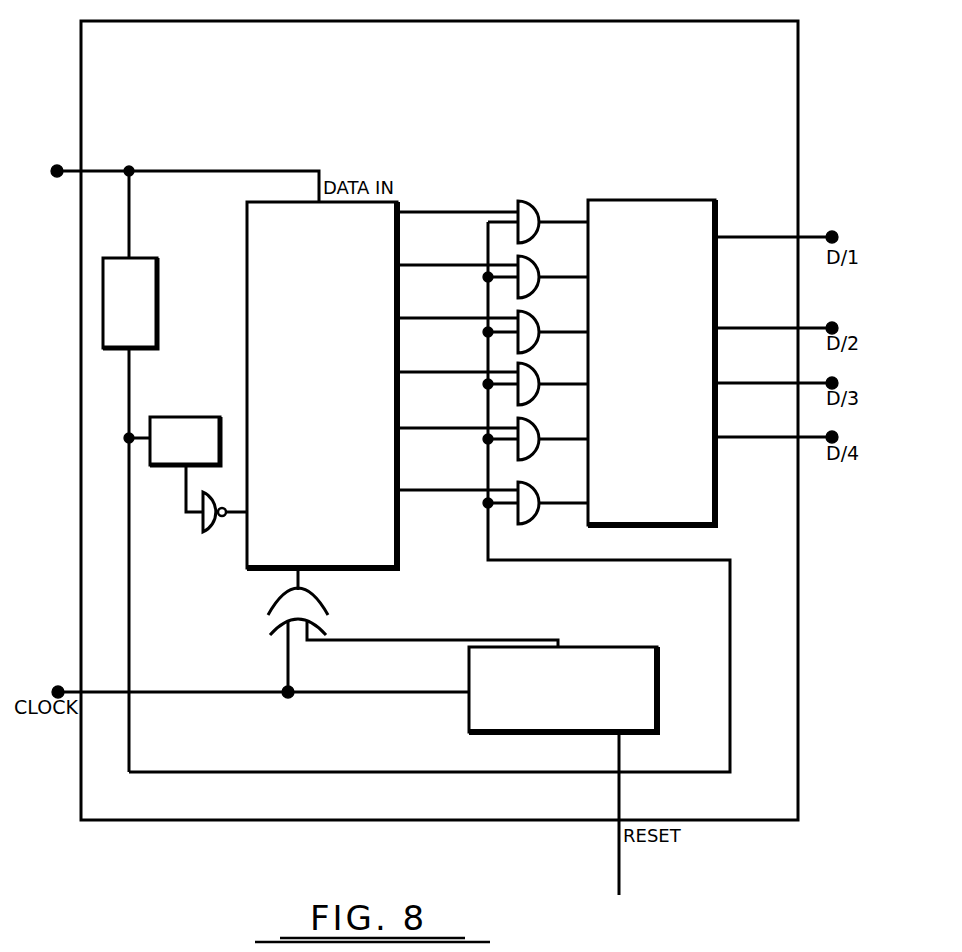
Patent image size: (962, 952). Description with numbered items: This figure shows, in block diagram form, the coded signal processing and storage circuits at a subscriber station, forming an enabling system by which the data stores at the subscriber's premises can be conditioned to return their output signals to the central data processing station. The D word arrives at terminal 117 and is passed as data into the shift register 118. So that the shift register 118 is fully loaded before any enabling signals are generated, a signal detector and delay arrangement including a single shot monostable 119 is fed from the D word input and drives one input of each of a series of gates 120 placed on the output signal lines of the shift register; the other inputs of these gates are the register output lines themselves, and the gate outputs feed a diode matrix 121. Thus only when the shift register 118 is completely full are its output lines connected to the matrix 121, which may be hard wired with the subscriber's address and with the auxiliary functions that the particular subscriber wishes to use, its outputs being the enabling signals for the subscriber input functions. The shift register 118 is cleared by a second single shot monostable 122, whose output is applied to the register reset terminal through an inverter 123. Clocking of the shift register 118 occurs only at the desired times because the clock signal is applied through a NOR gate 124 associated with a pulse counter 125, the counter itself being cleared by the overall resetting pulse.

The terminal 117 is at (55, 165).
The shift register 118 is at (258, 292).
The single shot monostable 119 is at (133, 333).
The gates 120 is at (533, 204).
The diode matrix 121 is at (663, 231).
The second single shot monostable 122 is at (185, 428).
The inverter 123 is at (203, 527).
The NOR gate 124 is at (271, 612).
The pulse counter 125 is at (643, 672).